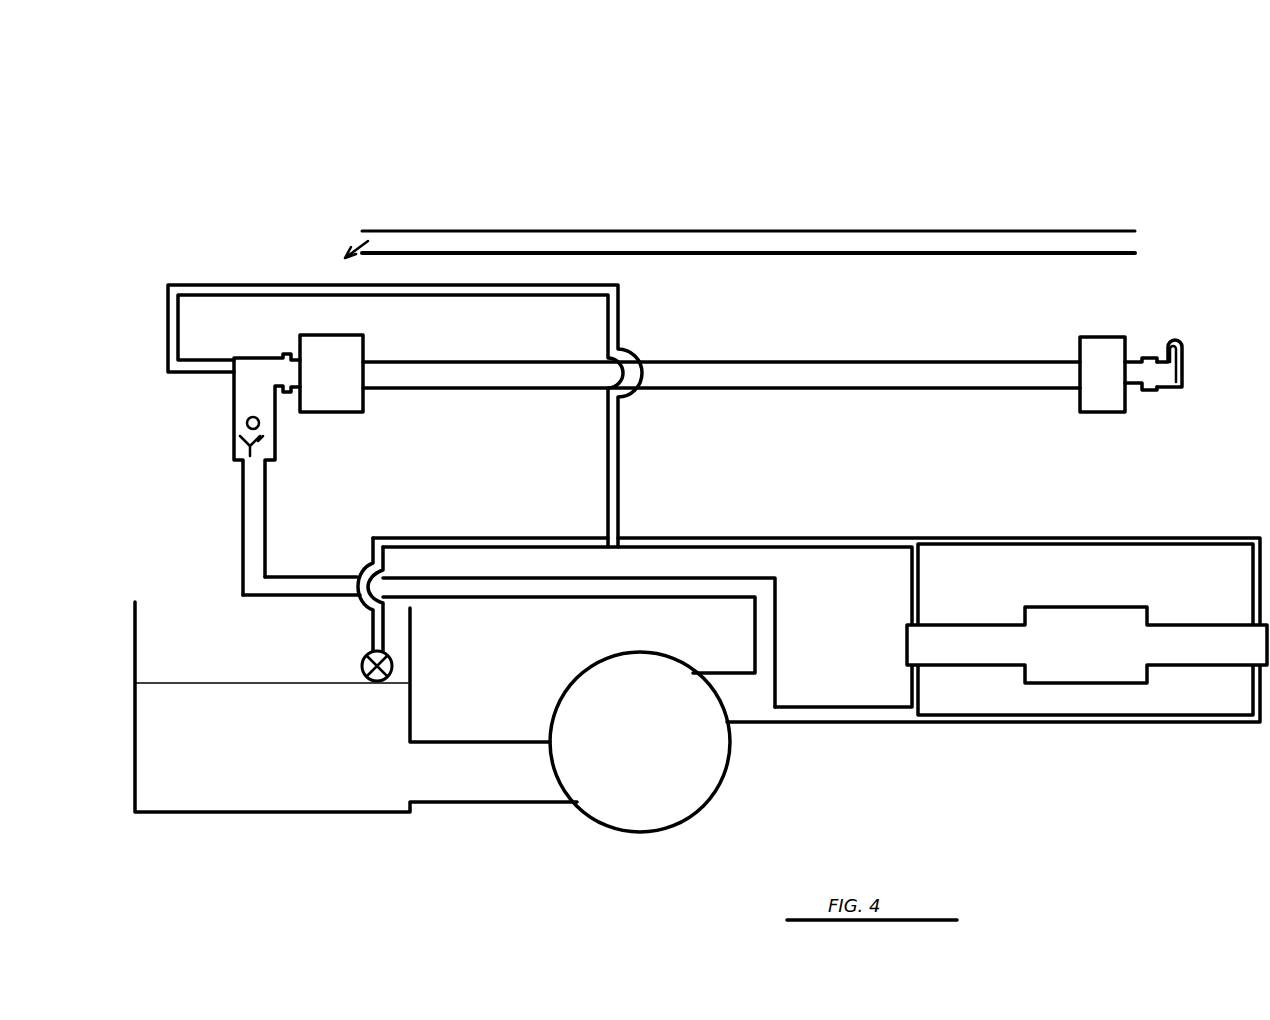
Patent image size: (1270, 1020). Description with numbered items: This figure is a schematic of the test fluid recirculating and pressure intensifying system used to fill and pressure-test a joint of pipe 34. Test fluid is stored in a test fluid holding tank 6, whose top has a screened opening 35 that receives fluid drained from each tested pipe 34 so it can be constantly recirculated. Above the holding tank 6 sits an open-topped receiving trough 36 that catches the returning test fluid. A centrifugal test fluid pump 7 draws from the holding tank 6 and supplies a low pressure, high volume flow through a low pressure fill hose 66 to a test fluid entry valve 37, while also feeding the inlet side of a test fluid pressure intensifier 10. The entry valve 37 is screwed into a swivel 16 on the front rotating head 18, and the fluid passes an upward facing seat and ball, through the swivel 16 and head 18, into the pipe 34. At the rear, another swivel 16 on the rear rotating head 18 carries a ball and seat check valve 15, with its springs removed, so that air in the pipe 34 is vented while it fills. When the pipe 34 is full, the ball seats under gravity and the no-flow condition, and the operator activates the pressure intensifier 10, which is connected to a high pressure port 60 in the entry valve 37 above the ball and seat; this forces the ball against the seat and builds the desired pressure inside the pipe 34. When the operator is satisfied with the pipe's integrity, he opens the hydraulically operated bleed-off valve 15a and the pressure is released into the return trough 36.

The test fluid holding tank 6 is at (200, 793).
The centrifugal test fluid pump 7 is at (685, 773).
The test fluid pressure intensifier 10 is at (1102, 662).
The ball and seat check valve 15 is at (1183, 365).
The hydraulically operated bleed-off valve 15a is at (362, 660).
The swivel 16 is at (283, 355).
The rotating head 18 is at (345, 375).
The pipe 34 is at (470, 246).
The screened opening 35 is at (153, 683).
The receiving trough 36 is at (173, 636).
The test fluid entry valve 37 is at (245, 430).
The high pressure port 60 is at (222, 370).
The low pressure fill hose 66 is at (262, 540).